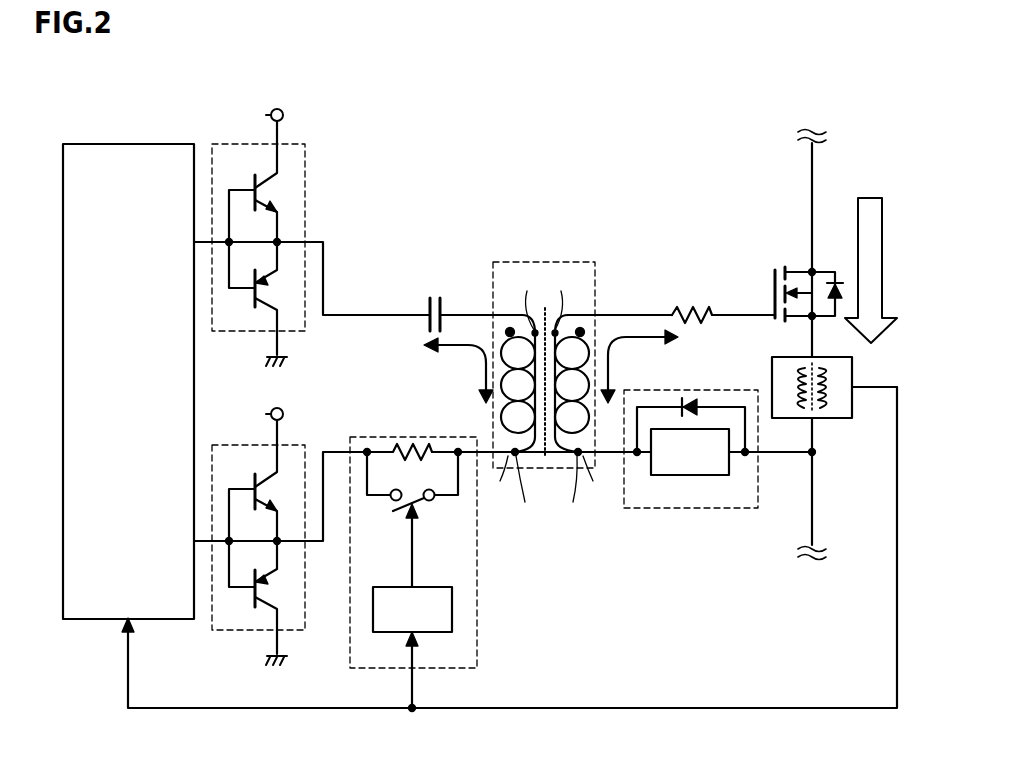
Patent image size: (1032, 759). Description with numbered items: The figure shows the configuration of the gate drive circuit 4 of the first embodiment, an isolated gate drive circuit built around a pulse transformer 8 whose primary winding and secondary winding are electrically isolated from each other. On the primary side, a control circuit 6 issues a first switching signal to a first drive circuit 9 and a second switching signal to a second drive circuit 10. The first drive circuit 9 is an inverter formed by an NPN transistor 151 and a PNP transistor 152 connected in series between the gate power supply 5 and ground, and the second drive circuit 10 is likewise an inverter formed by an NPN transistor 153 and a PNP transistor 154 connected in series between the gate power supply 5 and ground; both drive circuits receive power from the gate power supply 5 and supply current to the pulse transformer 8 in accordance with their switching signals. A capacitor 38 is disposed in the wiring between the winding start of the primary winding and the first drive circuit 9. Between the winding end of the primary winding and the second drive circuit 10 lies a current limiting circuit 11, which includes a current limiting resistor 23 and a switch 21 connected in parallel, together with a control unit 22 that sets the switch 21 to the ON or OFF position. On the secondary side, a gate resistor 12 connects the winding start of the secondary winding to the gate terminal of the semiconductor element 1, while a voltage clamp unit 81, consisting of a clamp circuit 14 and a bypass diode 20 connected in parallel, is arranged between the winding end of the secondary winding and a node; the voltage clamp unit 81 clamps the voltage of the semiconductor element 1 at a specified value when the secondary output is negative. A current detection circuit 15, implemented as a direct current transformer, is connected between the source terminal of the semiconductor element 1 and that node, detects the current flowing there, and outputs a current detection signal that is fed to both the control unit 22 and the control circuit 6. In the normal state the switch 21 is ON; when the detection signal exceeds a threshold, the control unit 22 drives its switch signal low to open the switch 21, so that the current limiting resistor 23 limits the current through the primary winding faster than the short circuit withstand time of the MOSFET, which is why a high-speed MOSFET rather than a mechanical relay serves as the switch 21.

The gate drive circuit 4 is at (898, 77).
The control circuit 6 is at (163, 144).
The gate power supply 5 is at (284, 109).
The first drive circuit 9 is at (303, 150).
The second drive circuit 10 is at (303, 449).
The NPN transistor 151 is at (253, 182).
The PNP transistor 152 is at (257, 305).
The NPN transistor 153 is at (253, 481).
The PNP transistor 154 is at (257, 606).
The capacitor 38 is at (434, 292).
The pulse transformer 8 is at (553, 262).
The gate resistor 12 is at (688, 300).
The semiconductor element 1 is at (781, 258).
The current detection circuit 15 is at (852, 362).
The voltage clamp unit 81 is at (695, 509).
The bypass diode 20 is at (690, 400).
The clamp circuit 14 is at (690, 476).
The current limiting circuit 11 is at (477, 566).
The current limiting resistor 23 is at (410, 440).
The switch 21 is at (393, 507).
The control unit 22 is at (452, 606).